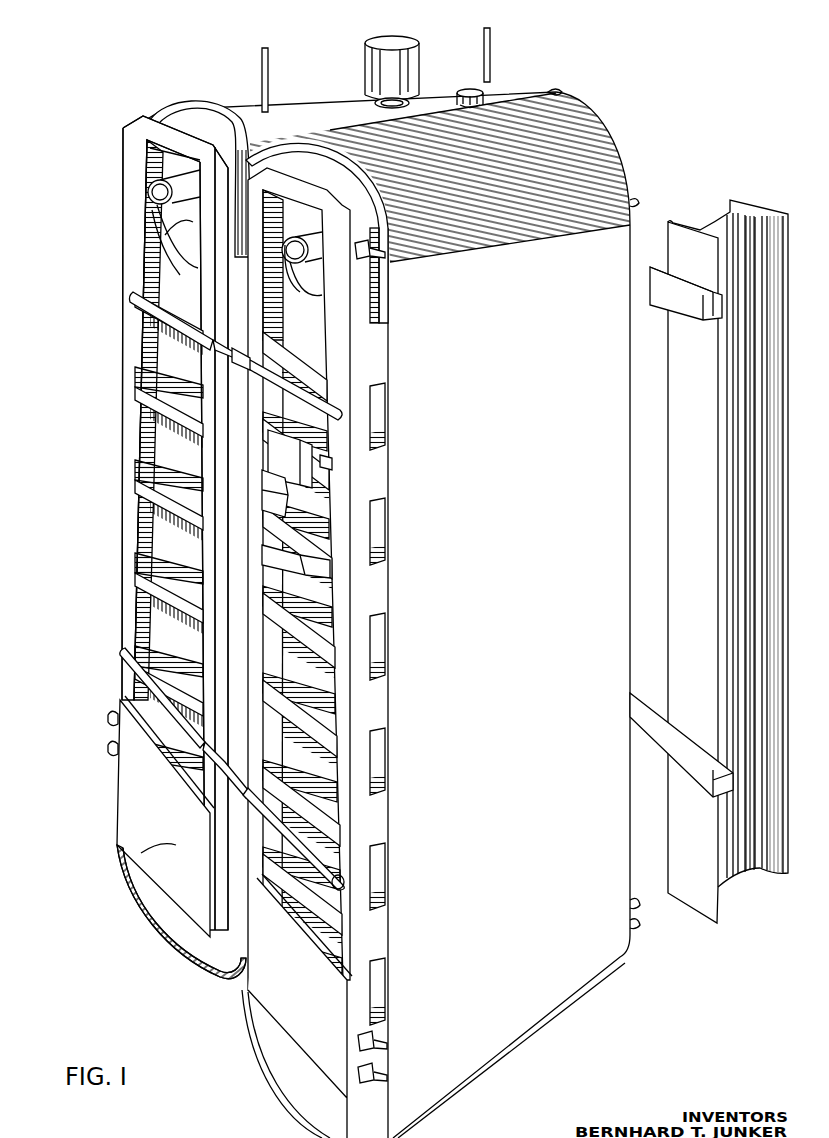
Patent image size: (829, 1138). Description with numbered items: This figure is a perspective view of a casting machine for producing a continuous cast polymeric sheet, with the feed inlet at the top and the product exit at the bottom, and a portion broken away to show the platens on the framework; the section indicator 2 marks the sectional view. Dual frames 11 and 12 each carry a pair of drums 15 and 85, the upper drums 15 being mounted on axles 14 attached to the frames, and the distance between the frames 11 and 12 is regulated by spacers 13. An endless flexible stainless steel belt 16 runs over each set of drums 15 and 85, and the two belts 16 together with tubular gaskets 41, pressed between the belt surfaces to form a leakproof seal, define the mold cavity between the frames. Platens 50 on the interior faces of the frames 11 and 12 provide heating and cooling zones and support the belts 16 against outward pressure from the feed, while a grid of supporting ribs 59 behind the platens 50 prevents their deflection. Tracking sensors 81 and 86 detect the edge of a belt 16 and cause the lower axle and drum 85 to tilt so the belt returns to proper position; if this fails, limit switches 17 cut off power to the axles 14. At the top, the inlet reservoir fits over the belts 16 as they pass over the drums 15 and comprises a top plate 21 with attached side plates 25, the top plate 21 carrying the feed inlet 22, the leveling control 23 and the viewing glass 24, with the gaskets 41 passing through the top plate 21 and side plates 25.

The section line indicator for FIG. 2 is at (357, 90).
The frame 11 is at (128, 568).
The frame 12 is at (375, 600).
The spacers 13 is at (225, 358).
The axles 14 is at (160, 196).
The drums 15 is at (165, 228).
The endless flexible stainless steel belt 16 is at (245, 95).
The limit switches 17 is at (388, 1050).
The top plate 21 is at (522, 86).
The feed inlet 22 is at (420, 40).
The leveling control 23 is at (340, 90).
The viewing glass 24 is at (293, 98).
The side plates 25 is at (230, 102).
The tubular gaskets 41 is at (262, 58).
The platens 50 is at (305, 458).
The supporting ribs 59 is at (270, 470).
The tracking sensor 81 is at (385, 255).
The drums 85 is at (200, 960).
The tracking sensor 86 is at (636, 202).